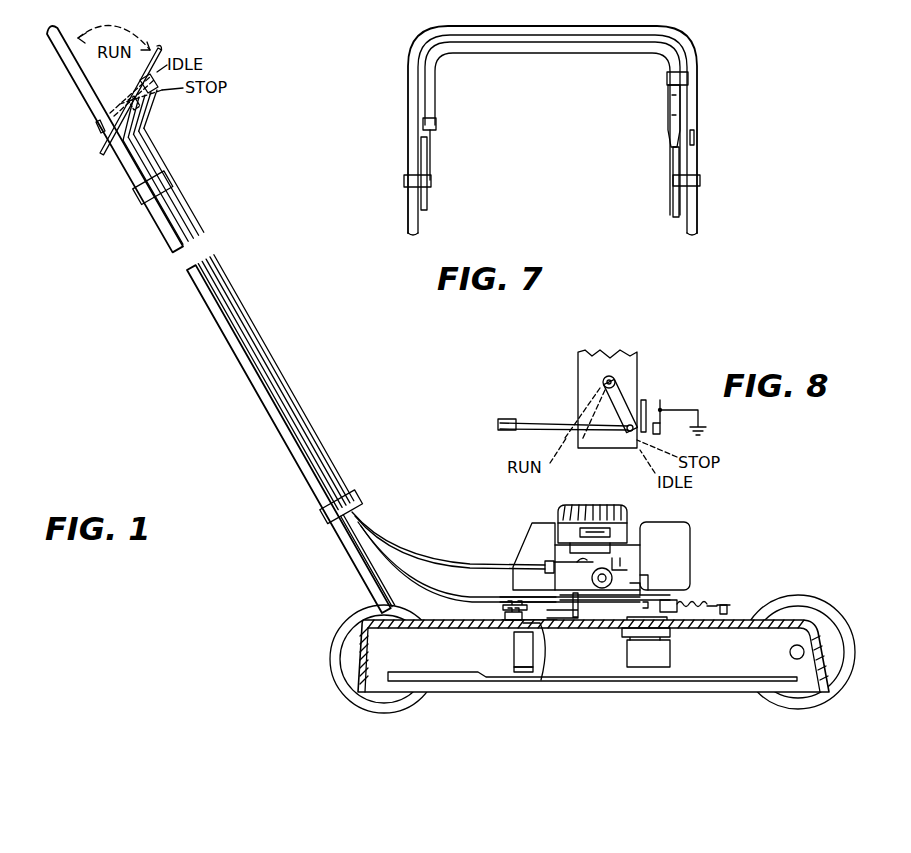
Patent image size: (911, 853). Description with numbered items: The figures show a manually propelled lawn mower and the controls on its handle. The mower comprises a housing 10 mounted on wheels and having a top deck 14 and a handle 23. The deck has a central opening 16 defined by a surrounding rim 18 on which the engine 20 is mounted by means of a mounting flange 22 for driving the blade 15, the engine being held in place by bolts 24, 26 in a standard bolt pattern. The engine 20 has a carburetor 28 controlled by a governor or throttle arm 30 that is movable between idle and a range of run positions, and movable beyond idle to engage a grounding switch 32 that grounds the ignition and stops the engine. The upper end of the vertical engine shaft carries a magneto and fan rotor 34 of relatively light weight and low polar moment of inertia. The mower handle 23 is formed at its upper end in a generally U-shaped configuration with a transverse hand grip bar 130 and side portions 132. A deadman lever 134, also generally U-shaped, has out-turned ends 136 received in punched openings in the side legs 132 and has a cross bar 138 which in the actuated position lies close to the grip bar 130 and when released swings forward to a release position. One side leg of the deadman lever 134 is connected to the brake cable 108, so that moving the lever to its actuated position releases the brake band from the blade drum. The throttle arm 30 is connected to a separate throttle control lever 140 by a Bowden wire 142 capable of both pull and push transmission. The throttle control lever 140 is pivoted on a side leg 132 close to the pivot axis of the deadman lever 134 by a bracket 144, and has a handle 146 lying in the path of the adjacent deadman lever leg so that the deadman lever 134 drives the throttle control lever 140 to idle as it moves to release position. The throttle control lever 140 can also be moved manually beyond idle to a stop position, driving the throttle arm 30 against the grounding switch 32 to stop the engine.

In FIG. 1, the housing 10 is at (745, 612).
In FIG. 1, the top deck 14 is at (462, 628).
In FIG. 1, the blade 15 is at (488, 682).
In FIG. 1, the central opening 16 is at (540, 680).
In FIG. 1, the rim 18 is at (503, 618).
In FIG. 1, the engine 20 is at (696, 532).
In FIG. 1, the mounting flange 22 is at (670, 613).
In FIG. 1, the handle 23 is at (167, 233).
In FIG. 7, the handle 23 is at (404, 220).
In FIG. 1, the bolt 24 is at (657, 582).
In FIG. 1, the bolt 26 is at (508, 603).
In FIG. 1, the carburetor 28 is at (613, 580).
In FIG. 8, the throttle arm 30 is at (622, 402).
In FIG. 8, the grounding switch 32 is at (660, 432).
In FIG. 1, the magneto and fan rotor 34 is at (560, 512).
In FIG. 1, the brake cable 108 is at (152, 147).
In FIG. 1, the hand grip bar 130 is at (45, 35).
In FIG. 7, the hand grip bar 130 is at (482, 28).
In FIG. 7, the side portions 132 is at (412, 95).
In FIG. 7, the deadman lever 134 is at (535, 50).
In FIG. 7, the out-turned ends 136 is at (436, 126).
In FIG. 1, the cross bar 138 is at (100, 36).
In FIG. 7, the cross bar 138 is at (617, 55).
In FIG. 1, the throttle control lever 140 is at (108, 145).
In FIG. 7, the throttle control lever 140 is at (668, 107).
In FIG. 1, the Bowden wire 142 is at (430, 558).
In FIG. 7, the Bowden wire 142 is at (672, 162).
In FIG. 8, the Bowden wire 142 is at (533, 423).
In FIG. 7, the bracket 144 is at (700, 147).
In FIG. 7, the handle 146 is at (688, 79).